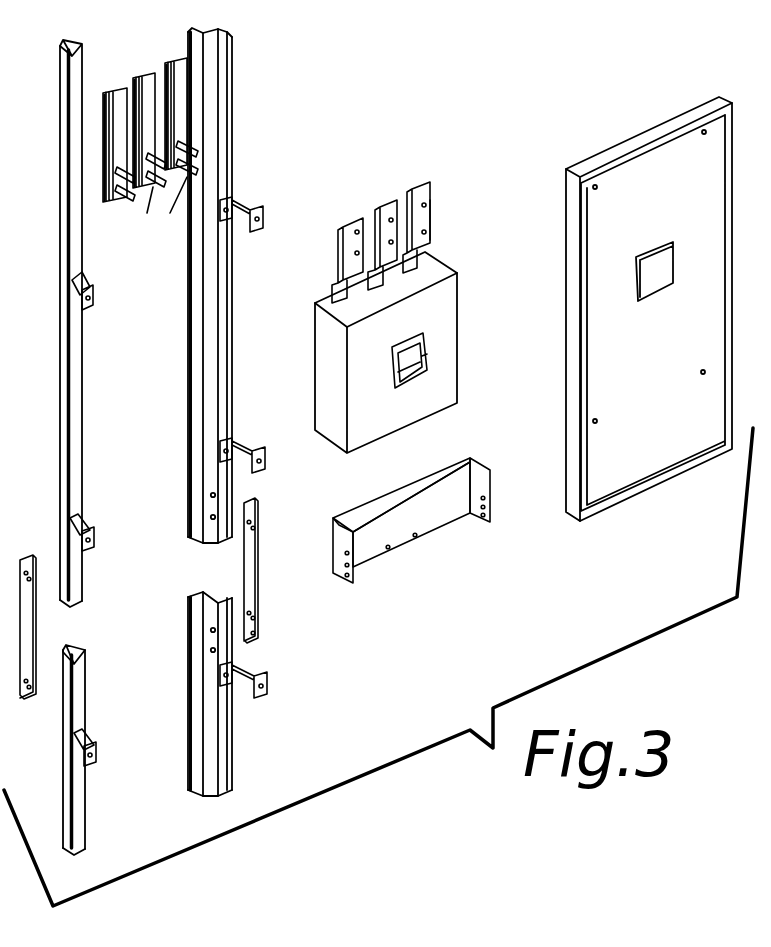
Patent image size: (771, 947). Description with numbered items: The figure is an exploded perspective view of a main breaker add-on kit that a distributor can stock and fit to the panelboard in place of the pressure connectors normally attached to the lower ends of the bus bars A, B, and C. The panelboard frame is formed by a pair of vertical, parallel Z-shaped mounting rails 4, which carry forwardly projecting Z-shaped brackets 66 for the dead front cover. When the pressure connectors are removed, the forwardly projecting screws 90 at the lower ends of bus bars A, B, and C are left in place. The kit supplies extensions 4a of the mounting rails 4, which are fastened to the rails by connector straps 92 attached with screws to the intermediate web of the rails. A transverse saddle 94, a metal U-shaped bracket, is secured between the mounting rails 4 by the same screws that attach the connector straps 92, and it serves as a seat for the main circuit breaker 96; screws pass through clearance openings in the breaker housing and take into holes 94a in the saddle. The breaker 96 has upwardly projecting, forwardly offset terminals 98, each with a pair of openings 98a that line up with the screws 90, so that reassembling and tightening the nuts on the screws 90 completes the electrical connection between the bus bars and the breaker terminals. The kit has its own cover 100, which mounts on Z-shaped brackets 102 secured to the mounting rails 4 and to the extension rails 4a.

The Z-shaped mounting rail 4 is at (70, 99).
The mounting rail extension 4a is at (204, 774).
The bus bar A is at (127, 88).
The bus bar B is at (155, 74).
The bus bar C is at (187, 58).
The Z-shaped bracket 66 is at (72, 290).
The screw 90 is at (121, 195).
The connector strap 92 is at (36, 625).
The transverse saddle 94 is at (448, 512).
The hole 94a is at (417, 537).
The main circuit breaker 96 is at (447, 318).
The terminal 98 is at (412, 195).
The opening 98a is at (420, 222).
The cover 100 is at (640, 152).
The Z-shaped bracket 102 is at (243, 443).